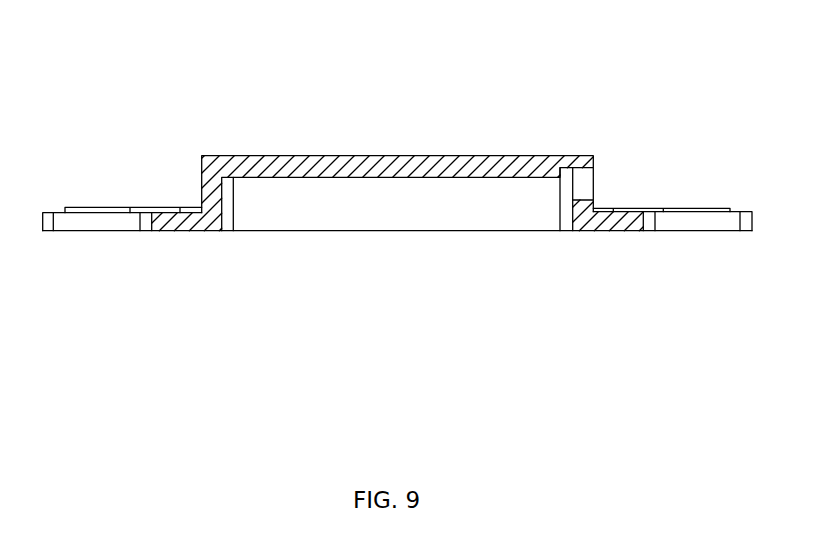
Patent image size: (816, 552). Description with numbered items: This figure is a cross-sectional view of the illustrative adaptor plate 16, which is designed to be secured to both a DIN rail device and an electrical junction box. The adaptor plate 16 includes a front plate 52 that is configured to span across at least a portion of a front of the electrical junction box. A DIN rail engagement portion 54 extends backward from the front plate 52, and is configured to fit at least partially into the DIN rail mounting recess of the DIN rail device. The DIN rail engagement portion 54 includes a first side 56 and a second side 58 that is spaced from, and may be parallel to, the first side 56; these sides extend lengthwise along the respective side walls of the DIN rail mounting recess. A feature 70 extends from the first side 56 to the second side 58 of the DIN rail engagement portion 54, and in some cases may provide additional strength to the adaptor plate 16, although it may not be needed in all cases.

The adaptor plate 16 is at (587, 68).
The front plate 52 is at (97, 223).
The DIN rail engagement portion 54 is at (383, 240).
The first side 56 is at (205, 185).
The second side 58 is at (573, 202).
The feature 70 is at (392, 155).